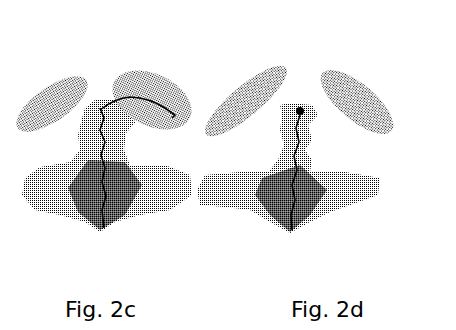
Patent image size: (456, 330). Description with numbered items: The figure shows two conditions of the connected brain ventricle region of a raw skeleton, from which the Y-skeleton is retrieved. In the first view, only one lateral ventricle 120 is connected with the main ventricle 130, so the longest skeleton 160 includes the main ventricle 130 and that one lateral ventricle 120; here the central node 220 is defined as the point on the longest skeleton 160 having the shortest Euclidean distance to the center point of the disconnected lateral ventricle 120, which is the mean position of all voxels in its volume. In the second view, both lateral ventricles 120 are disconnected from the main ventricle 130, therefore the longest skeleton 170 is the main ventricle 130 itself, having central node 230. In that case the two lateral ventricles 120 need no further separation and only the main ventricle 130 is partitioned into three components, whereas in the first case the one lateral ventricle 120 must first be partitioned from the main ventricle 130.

In FIG. 2c, the lateral ventricles 120 is at (65, 80).
In FIG. 2d, the lateral ventricles 120 is at (230, 87).
In FIG. 2c, the main ventricle 130 is at (138, 197).
In FIG. 2d, the main ventricle 130 is at (368, 183).
In FIG. 2c, the longest skeleton 160 is at (103, 192).
In FIG. 2d, the longest skeleton 170 is at (293, 193).
In FIG. 2c, the central node 220 is at (100, 108).
In FIG. 2d, the central node 230 is at (300, 108).